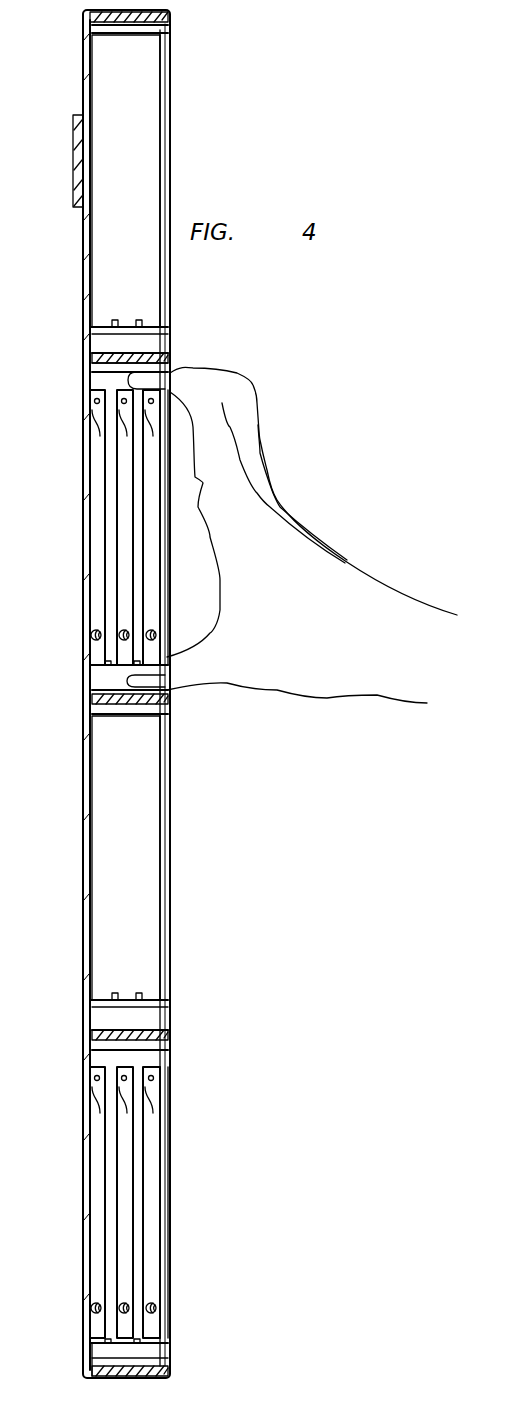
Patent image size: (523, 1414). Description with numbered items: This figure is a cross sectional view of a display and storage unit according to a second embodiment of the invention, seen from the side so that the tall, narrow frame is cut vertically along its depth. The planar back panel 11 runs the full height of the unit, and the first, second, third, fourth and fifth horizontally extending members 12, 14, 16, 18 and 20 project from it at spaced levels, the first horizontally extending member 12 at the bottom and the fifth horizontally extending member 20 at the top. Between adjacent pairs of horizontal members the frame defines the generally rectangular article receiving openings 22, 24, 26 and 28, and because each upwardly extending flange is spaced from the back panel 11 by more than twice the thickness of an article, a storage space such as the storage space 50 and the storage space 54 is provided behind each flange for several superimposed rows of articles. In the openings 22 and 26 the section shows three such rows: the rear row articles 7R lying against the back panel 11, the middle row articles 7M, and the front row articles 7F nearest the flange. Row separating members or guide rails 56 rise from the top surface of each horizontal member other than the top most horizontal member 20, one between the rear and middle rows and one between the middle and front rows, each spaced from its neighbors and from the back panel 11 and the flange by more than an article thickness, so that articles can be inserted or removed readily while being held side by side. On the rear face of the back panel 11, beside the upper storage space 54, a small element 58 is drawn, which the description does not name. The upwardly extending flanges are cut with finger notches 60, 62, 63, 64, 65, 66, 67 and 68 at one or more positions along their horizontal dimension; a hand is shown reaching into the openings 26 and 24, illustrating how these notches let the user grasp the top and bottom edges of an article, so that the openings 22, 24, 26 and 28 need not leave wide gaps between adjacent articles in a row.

The planar back panel 11 is at (84, 827).
The first horizontally extending member 12 is at (92, 1360).
The second horizontally extending member 14 is at (168, 1035).
The third horizontally extending member 16 is at (168, 700).
The fourth horizontally extending member 18 is at (168, 358).
The fifth horizontally extending member 20 is at (171, 13).
The article receiving opening 22 is at (170, 1247).
The article receiving opening 24 is at (165, 857).
The article receiving opening 26 is at (165, 628).
The article receiving opening 28 is at (165, 160).
The storage space 50 is at (143, 804).
The storage space 54 is at (139, 137).
The row separating member 56 is at (139, 320).
The clip 58 is at (73, 170).
The finger notch 60 is at (160, 1358).
The finger notch 62 is at (168, 1052).
The finger notch 63 is at (158, 1015).
The finger notch 64 is at (168, 712).
The finger notch 65 is at (92, 672).
The finger notch 66 is at (96, 363).
The finger notch 67 is at (155, 332).
The finger notch 68 is at (165, 33).
The rear row article 7R is at (96, 400).
The middle row article 7M is at (128, 448).
The front row article 7F is at (150, 563).